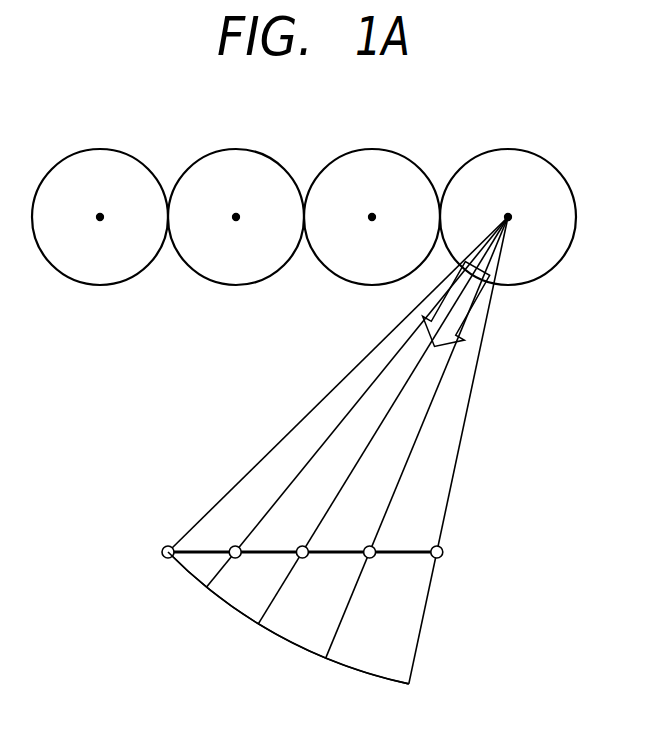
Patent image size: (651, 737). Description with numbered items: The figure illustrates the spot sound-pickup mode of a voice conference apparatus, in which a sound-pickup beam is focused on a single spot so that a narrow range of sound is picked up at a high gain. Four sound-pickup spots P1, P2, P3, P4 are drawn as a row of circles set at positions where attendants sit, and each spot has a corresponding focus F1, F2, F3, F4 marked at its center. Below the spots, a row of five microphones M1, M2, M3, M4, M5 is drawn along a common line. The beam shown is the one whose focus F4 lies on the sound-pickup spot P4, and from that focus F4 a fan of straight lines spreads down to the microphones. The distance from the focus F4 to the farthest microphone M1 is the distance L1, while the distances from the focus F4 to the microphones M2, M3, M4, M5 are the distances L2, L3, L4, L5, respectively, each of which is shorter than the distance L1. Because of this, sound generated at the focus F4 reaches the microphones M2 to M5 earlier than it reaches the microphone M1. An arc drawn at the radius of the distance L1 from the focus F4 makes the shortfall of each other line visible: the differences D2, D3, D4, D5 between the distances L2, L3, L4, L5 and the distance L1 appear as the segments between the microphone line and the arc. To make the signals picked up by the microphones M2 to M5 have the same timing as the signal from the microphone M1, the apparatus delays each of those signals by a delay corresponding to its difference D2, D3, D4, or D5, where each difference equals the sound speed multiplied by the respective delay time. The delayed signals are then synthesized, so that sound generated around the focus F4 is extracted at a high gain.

The sound-pickup spot P1 is at (95, 149).
The sound-pickup spot P2 is at (231, 149).
The sound-pickup spot P3 is at (367, 149).
The sound-pickup spot P4 is at (503, 149).
The focus F1 is at (100, 217).
The focus F2 is at (236, 217).
The focus F3 is at (372, 217).
The focus F4 is at (508, 217).
The distance L1 is at (338, 384).
The distance L2 is at (357, 402).
The distance L3 is at (383, 420).
The distance L4 is at (417, 437).
The distance L5 is at (458, 450).
The microphone M1 is at (155, 539).
The microphone M2 is at (225, 539).
The microphone M3 is at (290, 539).
The microphone M4 is at (358, 539).
The microphone M5 is at (423, 539).
The difference D2 is at (210, 574).
The difference D3 is at (260, 604).
The difference D4 is at (321, 628).
The difference D5 is at (392, 641).